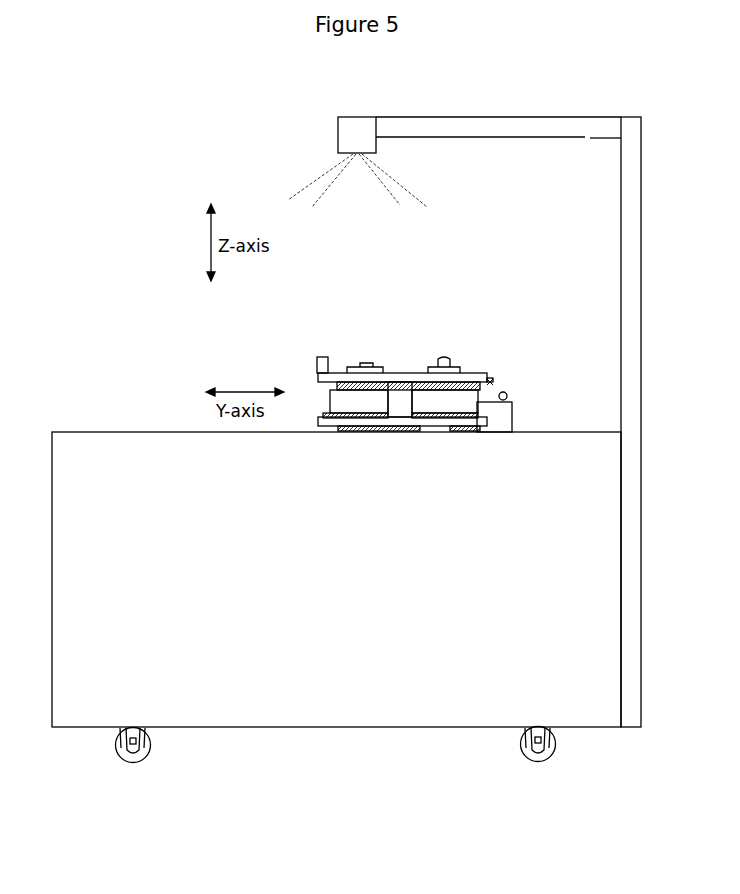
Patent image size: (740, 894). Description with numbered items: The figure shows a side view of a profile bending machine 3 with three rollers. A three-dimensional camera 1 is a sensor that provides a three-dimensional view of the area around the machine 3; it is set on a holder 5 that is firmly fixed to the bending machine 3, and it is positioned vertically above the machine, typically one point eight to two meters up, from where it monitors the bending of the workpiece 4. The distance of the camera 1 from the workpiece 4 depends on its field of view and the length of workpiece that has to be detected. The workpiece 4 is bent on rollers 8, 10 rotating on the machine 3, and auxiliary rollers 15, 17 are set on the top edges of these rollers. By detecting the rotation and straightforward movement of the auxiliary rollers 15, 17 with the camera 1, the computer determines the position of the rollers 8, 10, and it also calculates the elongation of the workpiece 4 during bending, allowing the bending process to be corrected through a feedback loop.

The 3D camera 1 is at (357, 132).
The bending machine 3 is at (95, 468).
The workpiece 4 is at (405, 427).
The holder 5 is at (632, 273).
The roller 8 is at (472, 372).
The roller 10 is at (388, 377).
The auxiliary roller 15 is at (445, 362).
The auxiliary roller 17 is at (325, 357).